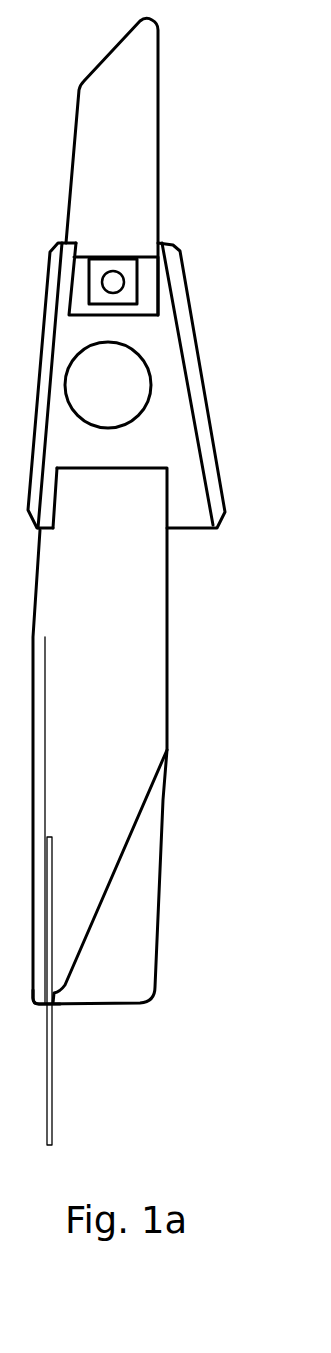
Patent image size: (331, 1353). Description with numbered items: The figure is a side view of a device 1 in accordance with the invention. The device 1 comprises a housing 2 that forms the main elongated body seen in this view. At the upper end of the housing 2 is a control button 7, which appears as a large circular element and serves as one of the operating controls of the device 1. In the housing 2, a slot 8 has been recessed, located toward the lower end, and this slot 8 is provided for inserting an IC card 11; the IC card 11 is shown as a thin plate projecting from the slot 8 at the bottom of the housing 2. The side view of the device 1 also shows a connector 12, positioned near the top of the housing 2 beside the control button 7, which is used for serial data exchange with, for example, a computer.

The device 1 is at (172, 112).
The housing 2 is at (167, 635).
The control button 7 is at (107, 385).
The slot 8 is at (52, 1005).
The IC card 11 is at (52, 1113).
The connector 12 is at (113, 282).